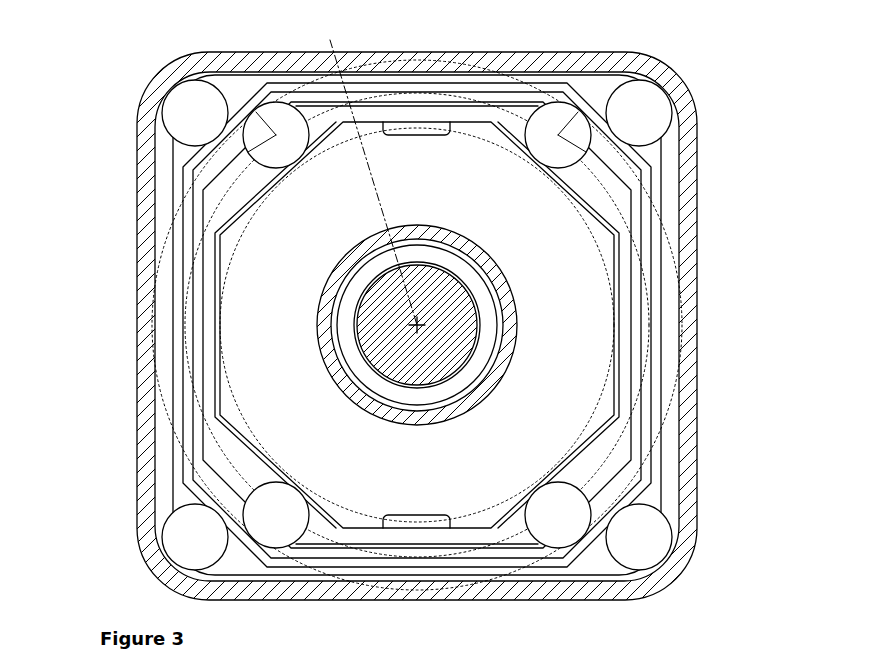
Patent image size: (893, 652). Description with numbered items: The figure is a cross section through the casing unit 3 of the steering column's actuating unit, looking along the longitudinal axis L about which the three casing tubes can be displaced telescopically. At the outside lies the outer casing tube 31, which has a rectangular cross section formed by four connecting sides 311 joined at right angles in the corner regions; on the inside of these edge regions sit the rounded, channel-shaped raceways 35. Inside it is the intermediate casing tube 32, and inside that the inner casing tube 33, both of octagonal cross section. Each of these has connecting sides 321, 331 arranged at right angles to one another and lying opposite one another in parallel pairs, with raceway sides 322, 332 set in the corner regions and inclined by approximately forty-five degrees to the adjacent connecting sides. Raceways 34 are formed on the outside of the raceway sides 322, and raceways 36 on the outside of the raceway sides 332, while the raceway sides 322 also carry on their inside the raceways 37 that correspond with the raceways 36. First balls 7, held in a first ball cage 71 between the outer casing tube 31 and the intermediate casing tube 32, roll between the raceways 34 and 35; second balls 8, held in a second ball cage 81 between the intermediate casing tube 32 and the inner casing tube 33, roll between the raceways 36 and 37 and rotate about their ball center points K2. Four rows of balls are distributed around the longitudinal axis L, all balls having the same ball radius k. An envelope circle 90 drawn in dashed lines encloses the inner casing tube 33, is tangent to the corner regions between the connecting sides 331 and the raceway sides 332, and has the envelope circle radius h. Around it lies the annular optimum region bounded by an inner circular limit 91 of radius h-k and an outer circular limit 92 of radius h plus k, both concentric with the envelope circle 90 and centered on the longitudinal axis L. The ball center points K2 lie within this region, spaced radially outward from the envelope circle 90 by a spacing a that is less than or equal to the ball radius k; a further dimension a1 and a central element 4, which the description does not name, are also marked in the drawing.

The casing unit 3 is at (689, 505).
The outer casing tube 31 is at (654, 476).
The connecting sides 311 is at (492, 80).
The intermediate casing tube 32 is at (636, 438).
The connecting sides 321 is at (258, 284).
The raceway sides 322 is at (176, 172).
The inner casing tube 33 is at (617, 378).
The connecting sides 331 is at (206, 395).
The raceway sides 332 is at (216, 452).
The raceway 34 is at (236, 104).
The raceway 35 is at (168, 96).
The raceway 36 is at (598, 168).
The raceway 37 is at (598, 76).
The hub ring 4 is at (437, 347).
The first balls 7 is at (193, 100).
The second balls 8 is at (292, 112).
The first ball cage 71 is at (690, 190).
The second ball cage 81 is at (480, 303).
The envelope circle 90 is at (365, 302).
The inner circular limit 91 is at (322, 338).
The outer circular limit 92 is at (380, 295).
The envelope circle radius h is at (186, 325).
The radius of the inner circular limit h-k is at (395, 128).
The ball radius k is at (247, 112).
The ball center points K2 is at (276, 128).
The longitudinal axis L is at (417, 325).
The spacing a is at (572, 64).
The distance a1 is at (445, 108).